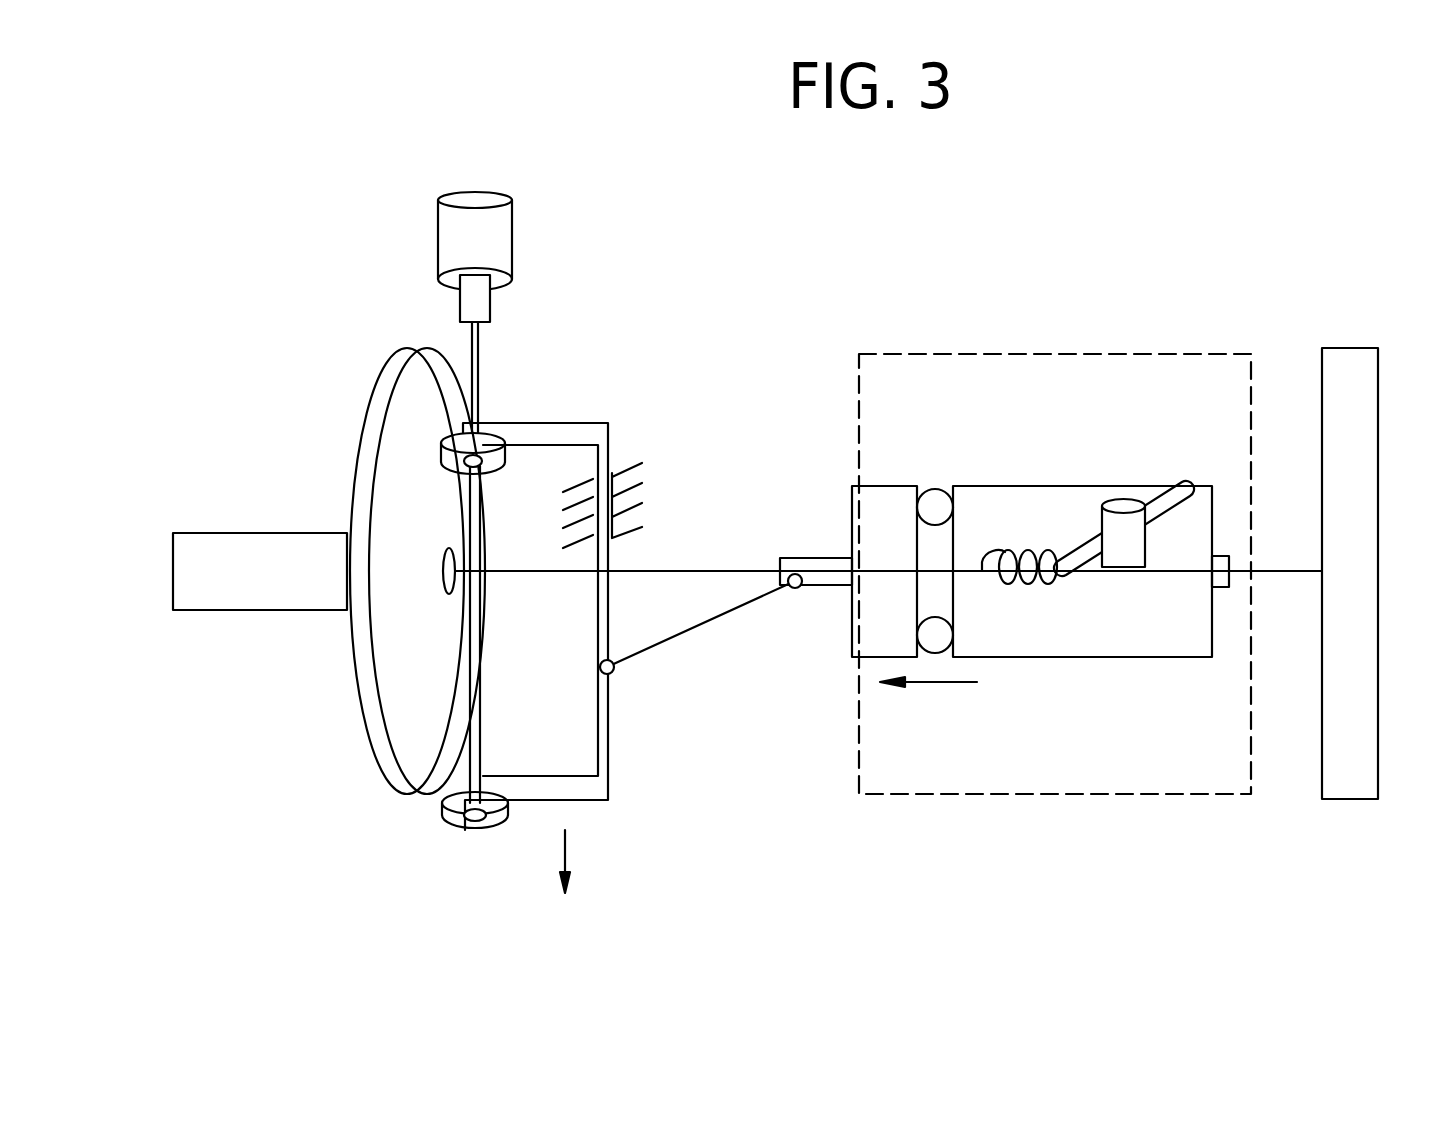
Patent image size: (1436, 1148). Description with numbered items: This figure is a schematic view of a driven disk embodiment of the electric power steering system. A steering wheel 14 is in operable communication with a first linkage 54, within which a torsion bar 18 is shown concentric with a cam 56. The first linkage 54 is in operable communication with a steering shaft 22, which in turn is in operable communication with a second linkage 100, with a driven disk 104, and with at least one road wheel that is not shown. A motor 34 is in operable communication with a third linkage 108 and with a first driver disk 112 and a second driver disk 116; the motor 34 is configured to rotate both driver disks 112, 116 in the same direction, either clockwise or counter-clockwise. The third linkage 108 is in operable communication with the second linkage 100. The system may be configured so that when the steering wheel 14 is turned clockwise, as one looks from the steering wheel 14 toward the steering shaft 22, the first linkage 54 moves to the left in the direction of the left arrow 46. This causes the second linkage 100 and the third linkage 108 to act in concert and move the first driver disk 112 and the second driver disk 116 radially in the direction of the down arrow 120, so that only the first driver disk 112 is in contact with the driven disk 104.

The steering wheel 14 is at (1348, 355).
The torsion bar 18 is at (1018, 550).
The steering shaft 22 is at (203, 598).
The motor 34 is at (512, 228).
The left arrow 46 is at (957, 685).
The first linkage 54 is at (945, 352).
The cam 56 is at (1088, 525).
The second linkage 100 is at (723, 620).
The driven disk 104 is at (455, 648).
The third linkage 108 is at (608, 423).
The first driver disk 112 is at (487, 445).
The second driver disk 116 is at (487, 835).
The down arrow 120 is at (567, 848).